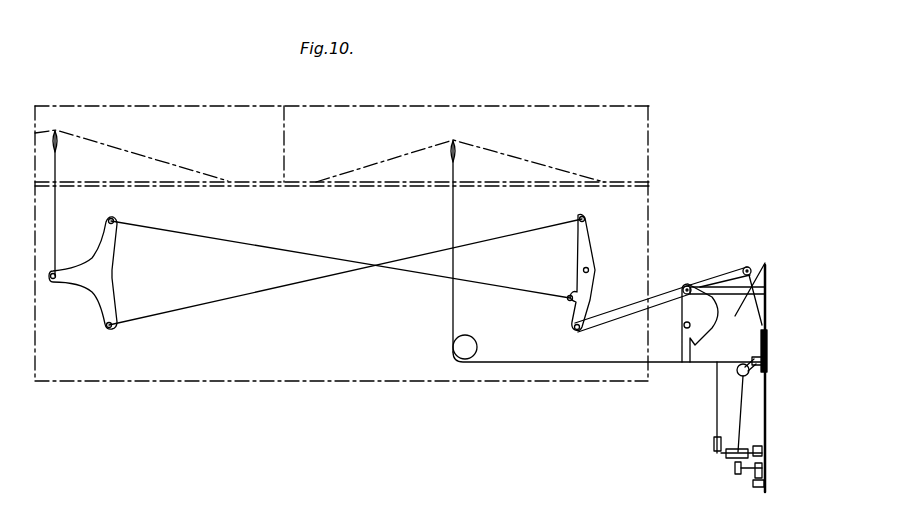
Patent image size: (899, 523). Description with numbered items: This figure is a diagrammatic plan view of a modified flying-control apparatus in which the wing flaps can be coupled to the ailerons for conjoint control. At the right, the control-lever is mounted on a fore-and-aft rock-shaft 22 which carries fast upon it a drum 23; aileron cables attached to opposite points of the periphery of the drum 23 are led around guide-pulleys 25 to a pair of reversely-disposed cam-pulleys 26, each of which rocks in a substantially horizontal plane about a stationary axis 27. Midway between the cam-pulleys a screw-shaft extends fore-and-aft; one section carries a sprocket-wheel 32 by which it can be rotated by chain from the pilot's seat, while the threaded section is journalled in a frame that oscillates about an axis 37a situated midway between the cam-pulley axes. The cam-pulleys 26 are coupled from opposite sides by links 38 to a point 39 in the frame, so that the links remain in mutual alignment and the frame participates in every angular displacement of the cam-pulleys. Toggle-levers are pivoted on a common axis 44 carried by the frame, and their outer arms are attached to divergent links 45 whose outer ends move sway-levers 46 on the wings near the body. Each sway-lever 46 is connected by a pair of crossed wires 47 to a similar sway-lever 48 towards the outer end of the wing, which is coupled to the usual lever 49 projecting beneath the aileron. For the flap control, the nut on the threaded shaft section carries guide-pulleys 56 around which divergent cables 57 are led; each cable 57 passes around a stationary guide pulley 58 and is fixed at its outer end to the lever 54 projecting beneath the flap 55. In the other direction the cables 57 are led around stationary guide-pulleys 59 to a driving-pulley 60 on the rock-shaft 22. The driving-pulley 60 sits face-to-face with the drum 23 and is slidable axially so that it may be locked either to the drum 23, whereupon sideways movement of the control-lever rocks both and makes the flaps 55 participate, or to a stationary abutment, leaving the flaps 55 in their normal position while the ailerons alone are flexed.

The driving-pulley 60 is at (159, 113).
The flap 55 is at (574, 117).
The aileron lever 49 is at (60, 158).
The flap lever 54 is at (458, 162).
The outer sway-lever 48 is at (92, 278).
The crossed wires 47 is at (250, 290).
The inner sway-lever 46 is at (579, 248).
The divergent link 45 is at (626, 308).
The stationary axis 27 is at (682, 322).
The link 38 is at (732, 291).
The common axis 44 is at (765, 268).
The frame coupling point 39 is at (762, 317).
The axis of oscillation 37a is at (745, 378).
The stationary guide pulley 58 is at (458, 347).
The flap cable 57 is at (600, 362).
The cam-pulley 26 is at (688, 330).
The guide-pulley on nut 56 is at (738, 372).
The sprocket-wheel 32 is at (755, 400).
The guide-pulley 25 is at (721, 449).
The drum 23 is at (737, 460).
The stationary guide-pulley 59 is at (737, 467).
The rock-shaft 22 is at (760, 485).